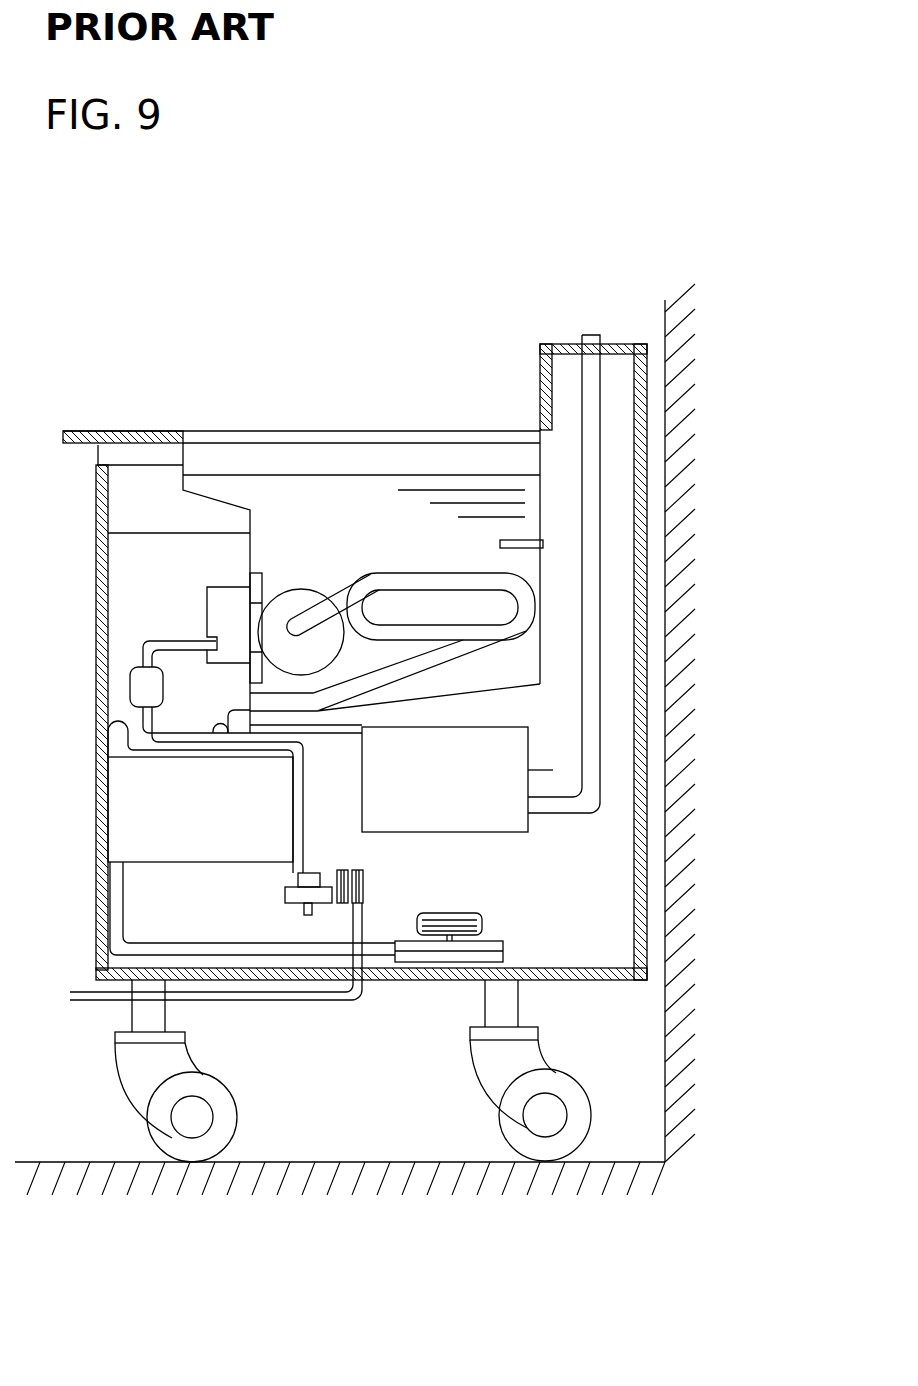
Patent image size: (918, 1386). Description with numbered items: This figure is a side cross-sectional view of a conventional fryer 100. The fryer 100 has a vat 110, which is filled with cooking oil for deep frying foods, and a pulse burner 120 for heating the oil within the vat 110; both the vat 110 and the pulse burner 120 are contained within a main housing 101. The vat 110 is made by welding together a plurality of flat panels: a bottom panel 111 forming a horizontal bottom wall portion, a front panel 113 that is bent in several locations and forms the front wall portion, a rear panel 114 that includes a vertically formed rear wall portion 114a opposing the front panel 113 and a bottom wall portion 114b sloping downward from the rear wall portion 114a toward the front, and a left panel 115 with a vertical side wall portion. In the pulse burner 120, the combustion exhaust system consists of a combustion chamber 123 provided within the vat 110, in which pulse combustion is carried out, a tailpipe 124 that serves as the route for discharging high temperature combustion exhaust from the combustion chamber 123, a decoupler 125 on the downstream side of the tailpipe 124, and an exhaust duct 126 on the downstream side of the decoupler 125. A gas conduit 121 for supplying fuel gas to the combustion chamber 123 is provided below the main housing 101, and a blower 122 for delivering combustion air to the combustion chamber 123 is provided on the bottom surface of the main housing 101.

The fryer 100 is at (326, 343).
The main housing 101 is at (634, 858).
The vat 110 is at (261, 410).
The bottom panel 111 is at (277, 733).
The front panel 113 is at (250, 538).
The rear panel 114 is at (543, 575).
The rear wall portion 114a is at (541, 633).
The bottom wall portion 114b is at (438, 711).
The left panel 115 is at (390, 462).
The pulse burner 120 is at (69, 714).
The gas conduit 121 is at (273, 1000).
The blower 122 is at (430, 973).
The combustion chamber 123 is at (288, 602).
The tailpipe 124 is at (436, 573).
The decoupler 125 is at (553, 770).
The exhaust duct 126 is at (600, 448).